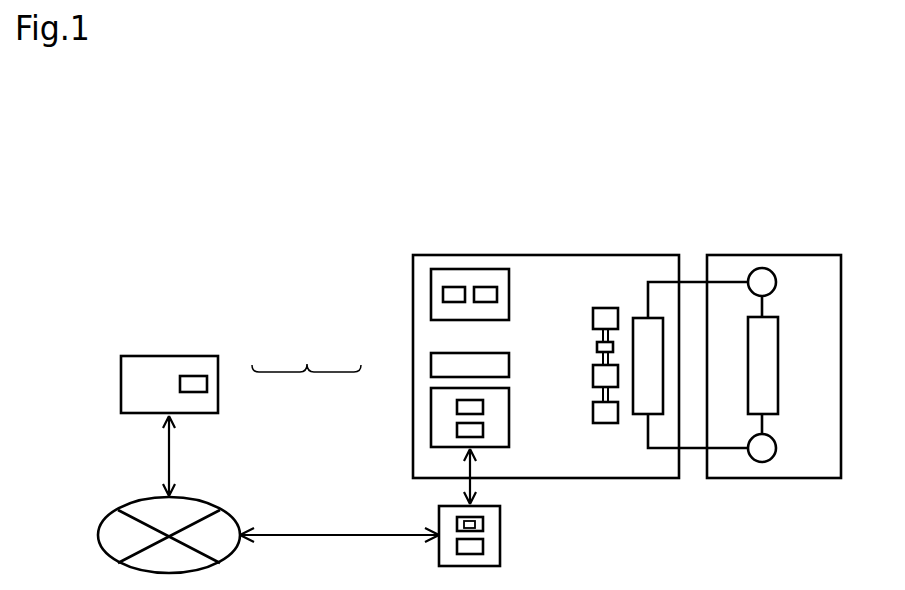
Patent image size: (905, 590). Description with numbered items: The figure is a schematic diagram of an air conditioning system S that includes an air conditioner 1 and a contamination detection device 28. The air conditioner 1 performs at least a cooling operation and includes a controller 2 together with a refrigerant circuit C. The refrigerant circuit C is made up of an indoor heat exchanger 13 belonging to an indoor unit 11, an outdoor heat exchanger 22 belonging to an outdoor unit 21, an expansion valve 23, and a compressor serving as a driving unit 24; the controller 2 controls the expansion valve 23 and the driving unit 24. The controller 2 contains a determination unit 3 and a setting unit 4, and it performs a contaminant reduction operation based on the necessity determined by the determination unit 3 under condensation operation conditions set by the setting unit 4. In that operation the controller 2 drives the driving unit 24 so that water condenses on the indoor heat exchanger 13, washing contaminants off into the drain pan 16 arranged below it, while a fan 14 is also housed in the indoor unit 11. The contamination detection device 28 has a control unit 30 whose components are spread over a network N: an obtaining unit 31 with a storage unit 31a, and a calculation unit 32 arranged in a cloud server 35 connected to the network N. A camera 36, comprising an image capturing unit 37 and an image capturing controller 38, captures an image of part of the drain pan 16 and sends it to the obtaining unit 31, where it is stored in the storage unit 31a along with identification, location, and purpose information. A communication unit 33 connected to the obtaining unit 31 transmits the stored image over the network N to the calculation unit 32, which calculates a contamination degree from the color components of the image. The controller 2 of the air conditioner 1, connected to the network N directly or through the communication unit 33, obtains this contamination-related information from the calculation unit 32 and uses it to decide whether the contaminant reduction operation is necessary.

The air conditioner 1 is at (548, 232).
The controller 2 is at (509, 293).
The determination unit 3 is at (455, 287).
The setting unit 4 is at (485, 287).
The indoor unit 11 is at (437, 255).
The indoor heat exchanger 13 is at (639, 318).
The fan 14 is at (603, 424).
The drain pan 16 is at (509, 364).
The outdoor unit 21 is at (727, 255).
The outdoor heat exchanger 22 is at (778, 365).
The expansion valve 23 is at (776, 282).
The driving unit 24 is at (776, 448).
The contamination detection device 28 is at (289, 309).
The control unit 30 is at (306, 348).
The obtaining unit 31 is at (439, 523).
The storage unit 31a is at (483, 521).
The calculation unit 32 is at (207, 384).
The communication unit 33 is at (483, 547).
The cloud server 35 is at (146, 356).
The camera 36 is at (509, 397).
The image capturing unit 37 is at (483, 406).
The image capturing controller 38 is at (483, 431).
The refrigerant circuit C is at (733, 463).
The network N is at (98, 535).
The air conditioning system S is at (614, 176).